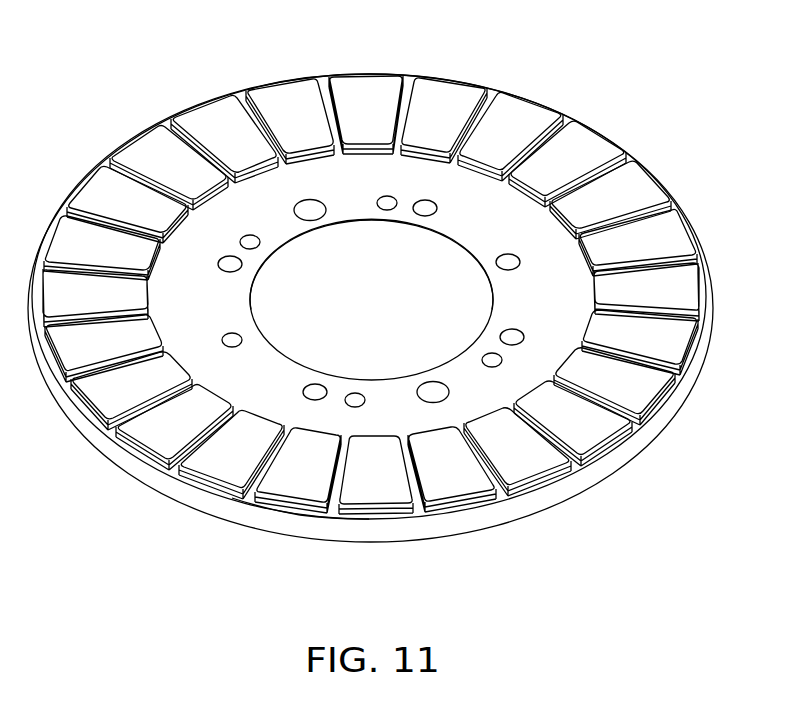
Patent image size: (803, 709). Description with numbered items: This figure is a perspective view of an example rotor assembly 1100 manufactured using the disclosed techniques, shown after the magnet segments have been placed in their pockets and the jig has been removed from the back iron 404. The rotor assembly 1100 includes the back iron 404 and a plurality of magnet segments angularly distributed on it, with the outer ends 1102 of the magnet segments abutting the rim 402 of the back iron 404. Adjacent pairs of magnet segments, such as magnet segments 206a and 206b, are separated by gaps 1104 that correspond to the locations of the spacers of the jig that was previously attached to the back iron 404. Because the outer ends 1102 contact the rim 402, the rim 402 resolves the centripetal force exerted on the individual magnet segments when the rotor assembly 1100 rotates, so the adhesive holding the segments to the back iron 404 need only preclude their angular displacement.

The rotor assembly 1100 is at (104, 96).
The rim 402 is at (230, 497).
The back iron 404 is at (668, 418).
The outer ends 1102 is at (292, 505).
The gaps 1104 is at (333, 510).
The magnet segment 206a is at (300, 440).
The magnet segment 206b is at (390, 495).